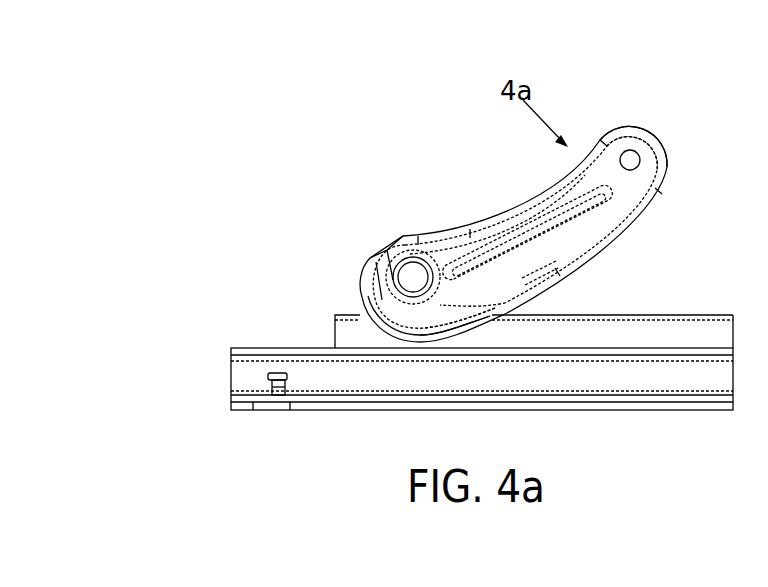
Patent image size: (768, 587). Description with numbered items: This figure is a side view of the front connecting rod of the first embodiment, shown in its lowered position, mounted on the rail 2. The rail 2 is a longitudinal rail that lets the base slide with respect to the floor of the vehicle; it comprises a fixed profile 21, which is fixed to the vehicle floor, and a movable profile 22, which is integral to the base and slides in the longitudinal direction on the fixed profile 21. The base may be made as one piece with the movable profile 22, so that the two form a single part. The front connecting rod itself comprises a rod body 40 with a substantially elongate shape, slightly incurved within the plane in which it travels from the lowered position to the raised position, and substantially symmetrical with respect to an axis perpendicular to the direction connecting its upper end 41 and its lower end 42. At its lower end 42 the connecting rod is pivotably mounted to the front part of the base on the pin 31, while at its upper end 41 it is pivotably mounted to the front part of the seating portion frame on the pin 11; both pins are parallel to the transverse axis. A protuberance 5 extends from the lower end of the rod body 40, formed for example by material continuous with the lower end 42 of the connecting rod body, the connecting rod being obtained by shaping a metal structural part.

The rail 2 is at (183, 305).
The fixed profile 21 is at (250, 378).
The movable profile 22 is at (343, 336).
The pin 31 is at (413, 277).
The rod body 40 is at (563, 230).
The upper end 41 is at (650, 150).
The pin 11 is at (630, 160).
The lower end 42 is at (447, 290).
The protuberance 5 is at (430, 327).